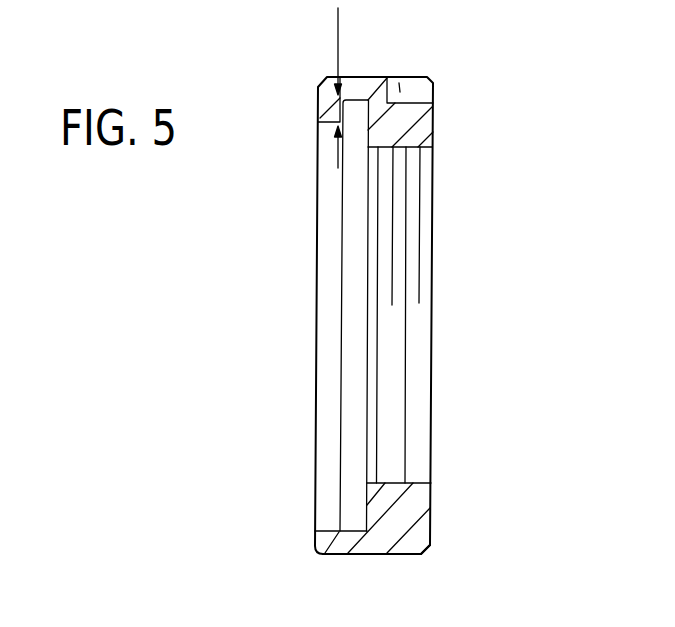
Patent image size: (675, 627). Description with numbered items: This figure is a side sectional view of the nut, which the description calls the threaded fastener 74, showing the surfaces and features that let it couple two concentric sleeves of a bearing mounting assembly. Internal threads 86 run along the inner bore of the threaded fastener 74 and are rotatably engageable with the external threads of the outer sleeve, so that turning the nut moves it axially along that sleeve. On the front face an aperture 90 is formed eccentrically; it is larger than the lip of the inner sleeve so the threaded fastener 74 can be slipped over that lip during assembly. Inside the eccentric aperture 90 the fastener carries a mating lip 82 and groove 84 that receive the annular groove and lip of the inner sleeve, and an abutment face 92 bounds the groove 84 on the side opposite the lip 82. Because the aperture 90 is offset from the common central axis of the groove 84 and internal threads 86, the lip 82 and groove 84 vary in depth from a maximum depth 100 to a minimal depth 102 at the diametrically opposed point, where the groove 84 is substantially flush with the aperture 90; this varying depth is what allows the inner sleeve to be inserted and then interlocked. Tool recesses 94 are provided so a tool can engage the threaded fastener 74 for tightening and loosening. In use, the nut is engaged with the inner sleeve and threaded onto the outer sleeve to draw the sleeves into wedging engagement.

The threaded fastener 74 is at (376, 543).
The lip 82 is at (334, 115).
The groove 84 is at (357, 114).
The internal threads 86 is at (414, 482).
The aperture 90 is at (325, 196).
The abutment face 92 is at (368, 137).
The tool recesses 94 is at (418, 88).
The maximum depth 100 is at (340, 40).
The minimal depth 102 is at (333, 544).